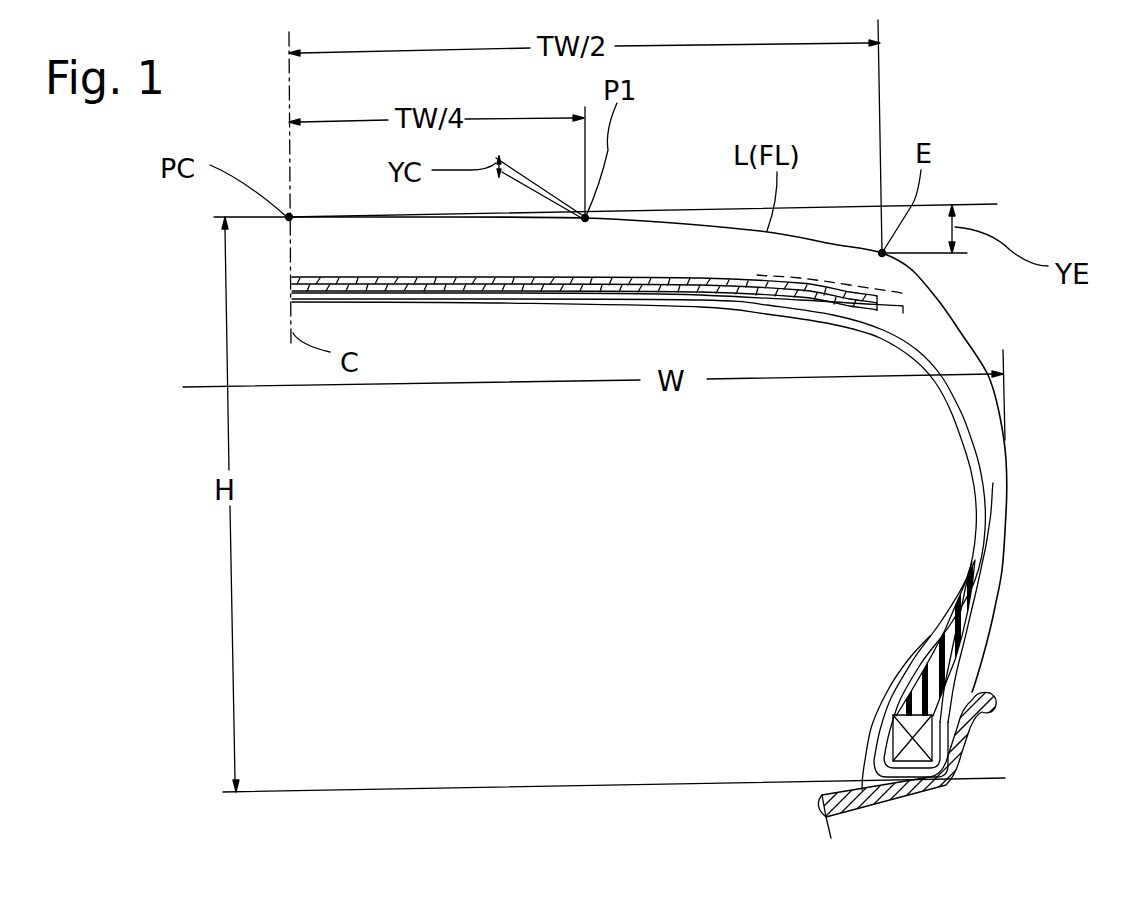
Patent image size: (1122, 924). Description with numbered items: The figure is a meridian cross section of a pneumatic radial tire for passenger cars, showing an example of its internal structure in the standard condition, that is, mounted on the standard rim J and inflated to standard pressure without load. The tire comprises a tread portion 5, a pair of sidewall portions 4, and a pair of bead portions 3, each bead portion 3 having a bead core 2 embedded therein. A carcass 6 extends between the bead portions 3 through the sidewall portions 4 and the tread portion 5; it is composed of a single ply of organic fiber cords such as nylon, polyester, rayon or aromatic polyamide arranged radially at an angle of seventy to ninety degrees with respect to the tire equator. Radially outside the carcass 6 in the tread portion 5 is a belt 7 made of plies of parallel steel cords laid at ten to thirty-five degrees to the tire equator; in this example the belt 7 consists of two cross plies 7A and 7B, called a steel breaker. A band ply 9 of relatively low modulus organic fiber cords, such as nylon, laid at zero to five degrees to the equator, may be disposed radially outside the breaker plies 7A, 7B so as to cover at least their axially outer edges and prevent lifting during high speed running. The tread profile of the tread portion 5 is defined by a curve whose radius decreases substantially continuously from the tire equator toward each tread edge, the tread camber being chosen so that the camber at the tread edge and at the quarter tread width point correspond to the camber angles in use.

The bead core 2 is at (893, 737).
The bead portion 3 is at (979, 682).
The sidewall portion 4 is at (1017, 455).
The tread portion 5 is at (622, 207).
The carcass 6 is at (970, 422).
The belt 7 is at (597, 387).
The cross ply 7A is at (428, 289).
The cross ply 7B is at (500, 281).
The band ply 9 is at (792, 277).
The standard rim J is at (845, 812).